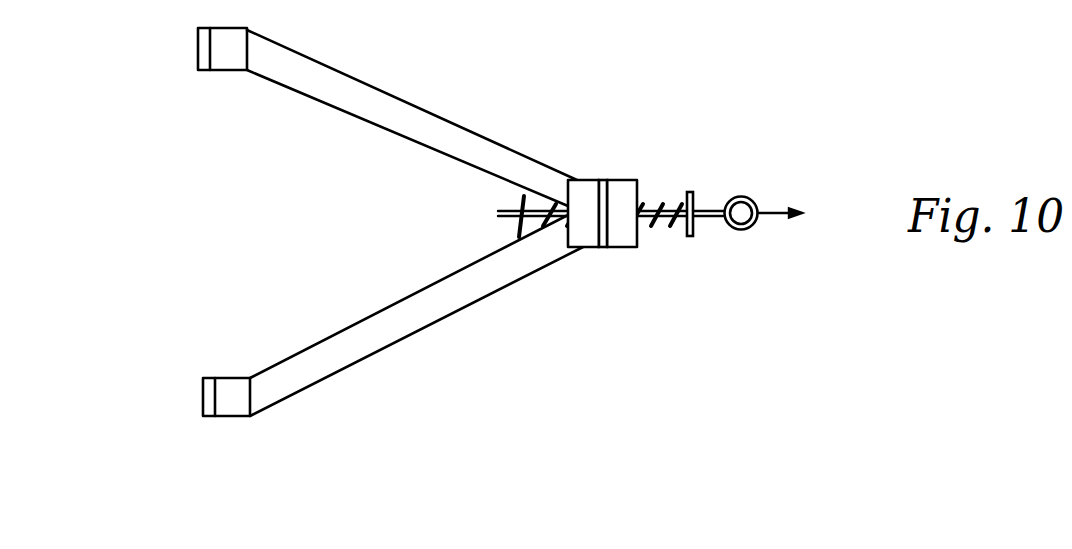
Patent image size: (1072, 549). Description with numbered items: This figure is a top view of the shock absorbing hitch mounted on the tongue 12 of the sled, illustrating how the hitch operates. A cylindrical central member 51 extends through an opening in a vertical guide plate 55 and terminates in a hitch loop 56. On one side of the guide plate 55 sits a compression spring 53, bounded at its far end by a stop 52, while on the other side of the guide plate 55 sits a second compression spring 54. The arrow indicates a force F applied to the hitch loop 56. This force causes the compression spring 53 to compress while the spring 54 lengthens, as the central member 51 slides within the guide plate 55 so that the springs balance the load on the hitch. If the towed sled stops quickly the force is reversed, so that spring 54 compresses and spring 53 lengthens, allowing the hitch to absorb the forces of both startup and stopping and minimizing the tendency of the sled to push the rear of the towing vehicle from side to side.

The tongue 12 is at (381, 87).
The cylindrical central member 51 is at (707, 212).
The stop 52 is at (518, 208).
The compression spring 53 is at (580, 199).
The second compression spring 54 is at (663, 202).
The vertical guide plate 55 is at (605, 192).
The hitch loop 56 is at (758, 204).